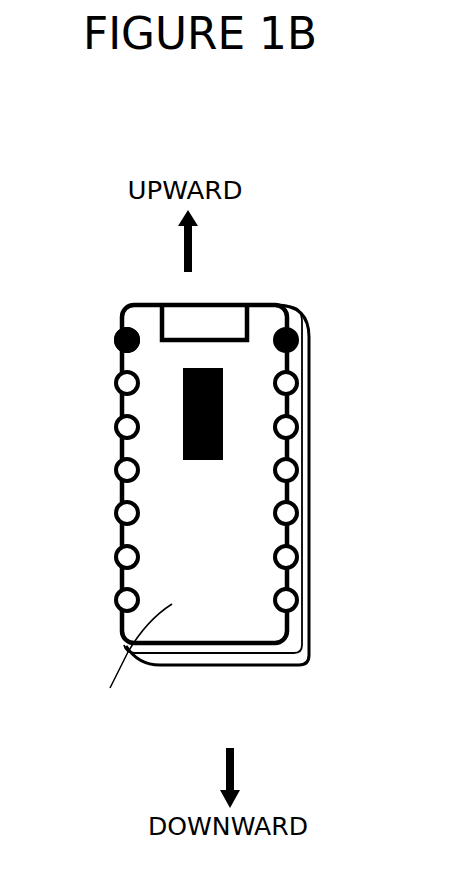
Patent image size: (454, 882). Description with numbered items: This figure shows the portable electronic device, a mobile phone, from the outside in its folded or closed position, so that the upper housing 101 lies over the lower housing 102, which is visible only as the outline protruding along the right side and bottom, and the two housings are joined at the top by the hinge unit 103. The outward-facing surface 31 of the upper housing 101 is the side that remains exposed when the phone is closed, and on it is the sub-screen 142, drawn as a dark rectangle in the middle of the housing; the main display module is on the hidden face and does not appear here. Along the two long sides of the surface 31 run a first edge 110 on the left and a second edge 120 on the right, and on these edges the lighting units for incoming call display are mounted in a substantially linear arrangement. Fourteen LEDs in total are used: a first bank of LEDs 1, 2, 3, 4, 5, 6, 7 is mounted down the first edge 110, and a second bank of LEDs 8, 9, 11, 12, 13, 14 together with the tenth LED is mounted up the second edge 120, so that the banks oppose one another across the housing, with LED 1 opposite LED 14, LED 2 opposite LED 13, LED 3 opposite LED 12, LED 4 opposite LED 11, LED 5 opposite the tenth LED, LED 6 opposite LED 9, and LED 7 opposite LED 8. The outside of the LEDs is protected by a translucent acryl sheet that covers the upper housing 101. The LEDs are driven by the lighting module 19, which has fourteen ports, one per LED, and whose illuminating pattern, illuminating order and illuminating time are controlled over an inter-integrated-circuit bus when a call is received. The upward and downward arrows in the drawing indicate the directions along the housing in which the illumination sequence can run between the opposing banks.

The upper housing 101 is at (227, 630).
The lower housing 102 is at (306, 652).
The hinge unit 103 is at (208, 317).
The first edge 110 is at (121, 579).
The second edge 120 is at (290, 573).
The sub-screen 142 is at (206, 462).
The lighting module 19 is at (132, 313).
The surface 31 is at (126, 652).
The LED 1 is at (114, 341).
The LED 2 is at (113, 384).
The LED 3 is at (113, 428).
The LED 4 is at (113, 471).
The LED 5 is at (113, 514).
The LED 6 is at (113, 558).
The LED 7 is at (113, 601).
The LED 8 is at (303, 601).
The LED 9 is at (303, 558).
The LED 11 is at (309, 471).
The LED 12 is at (309, 428).
The LED 13 is at (309, 384).
The LED 14 is at (309, 341).